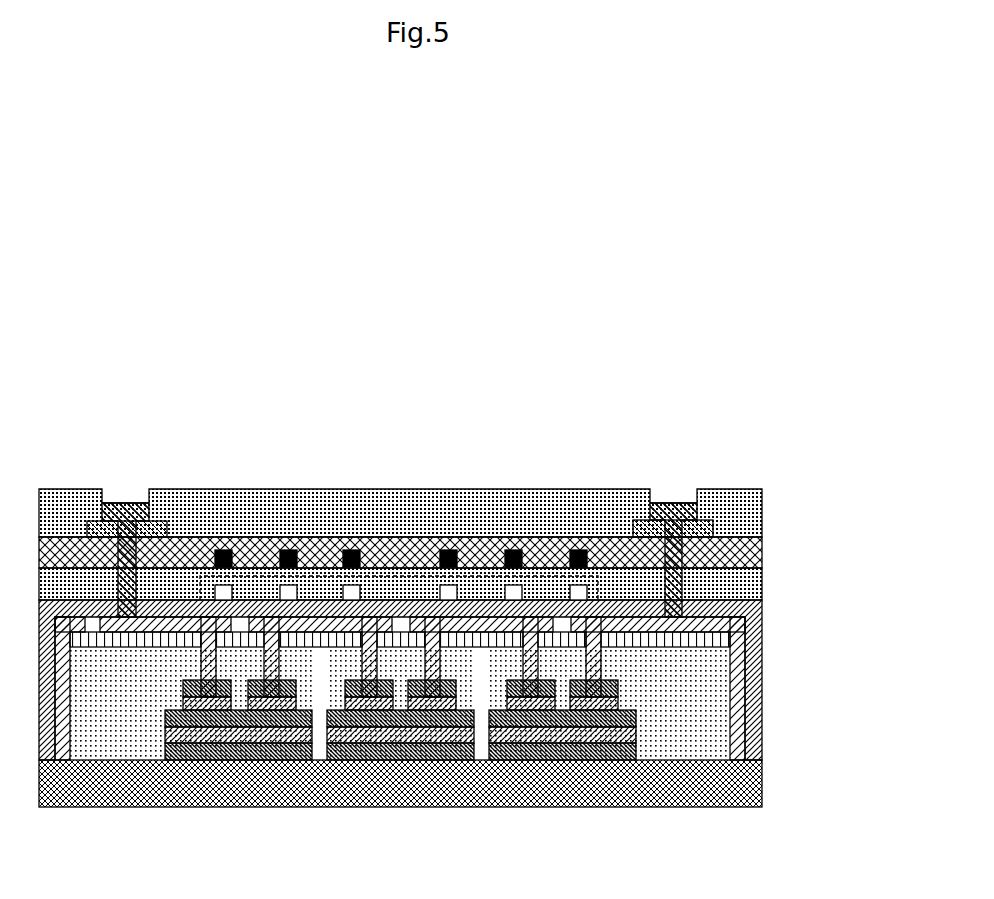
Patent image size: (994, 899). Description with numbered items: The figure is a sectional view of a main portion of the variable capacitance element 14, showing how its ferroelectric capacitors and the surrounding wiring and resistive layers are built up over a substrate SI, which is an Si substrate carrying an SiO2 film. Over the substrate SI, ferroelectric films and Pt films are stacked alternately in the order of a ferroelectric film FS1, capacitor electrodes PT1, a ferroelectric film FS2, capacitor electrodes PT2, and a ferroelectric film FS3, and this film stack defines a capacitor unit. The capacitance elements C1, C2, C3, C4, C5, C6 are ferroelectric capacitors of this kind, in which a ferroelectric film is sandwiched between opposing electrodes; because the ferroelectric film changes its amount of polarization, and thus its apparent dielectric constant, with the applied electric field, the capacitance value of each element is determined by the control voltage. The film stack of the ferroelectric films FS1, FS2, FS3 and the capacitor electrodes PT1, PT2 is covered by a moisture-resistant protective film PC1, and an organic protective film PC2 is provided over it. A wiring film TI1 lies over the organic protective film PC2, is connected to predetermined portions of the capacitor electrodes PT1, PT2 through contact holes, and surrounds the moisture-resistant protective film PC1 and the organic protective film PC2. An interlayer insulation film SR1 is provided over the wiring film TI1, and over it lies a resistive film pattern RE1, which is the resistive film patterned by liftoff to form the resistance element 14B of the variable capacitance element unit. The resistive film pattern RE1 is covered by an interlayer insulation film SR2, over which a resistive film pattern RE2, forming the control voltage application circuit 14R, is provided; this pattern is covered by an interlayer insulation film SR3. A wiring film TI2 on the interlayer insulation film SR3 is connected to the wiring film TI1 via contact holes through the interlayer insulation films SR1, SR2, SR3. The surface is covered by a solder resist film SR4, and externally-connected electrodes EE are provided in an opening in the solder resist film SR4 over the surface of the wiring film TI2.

The variable capacitance element 14 is at (428, 614).
The externally-connected electrodes EE is at (118, 503).
The resistance element 14B is at (188, 507).
The control voltage application circuit 14R is at (211, 585).
The resistive film pattern RE1 is at (368, 583).
The resistive film pattern RE2 is at (357, 550).
The interlayer insulation film SR1 is at (763, 605).
The interlayer insulation film SR2 is at (763, 580).
The interlayer insulation film SR3 is at (763, 547).
The solder resist film SR4 is at (763, 498).
The wiring film TI1 is at (763, 628).
The wiring film TI2 is at (716, 528).
The moisture-resistant protective film PC1 is at (718, 718).
The organic protective film PC2 is at (723, 642).
The ferroelectric film FS1 is at (636, 752).
The ferroelectric film FS2 is at (636, 718).
The ferroelectric film FS3 is at (612, 686).
The capacitor electrodes PT1 is at (636, 735).
The capacitor electrodes PT2 is at (620, 703).
The substrate SI is at (747, 782).
The capacitance element C1 is at (212, 724).
The capacitance element C2 is at (272, 724).
The capacitance element C3 is at (370, 724).
The capacitance element C4 is at (432, 724).
The capacitance element C5 is at (533, 724).
The capacitance element C6 is at (598, 724).